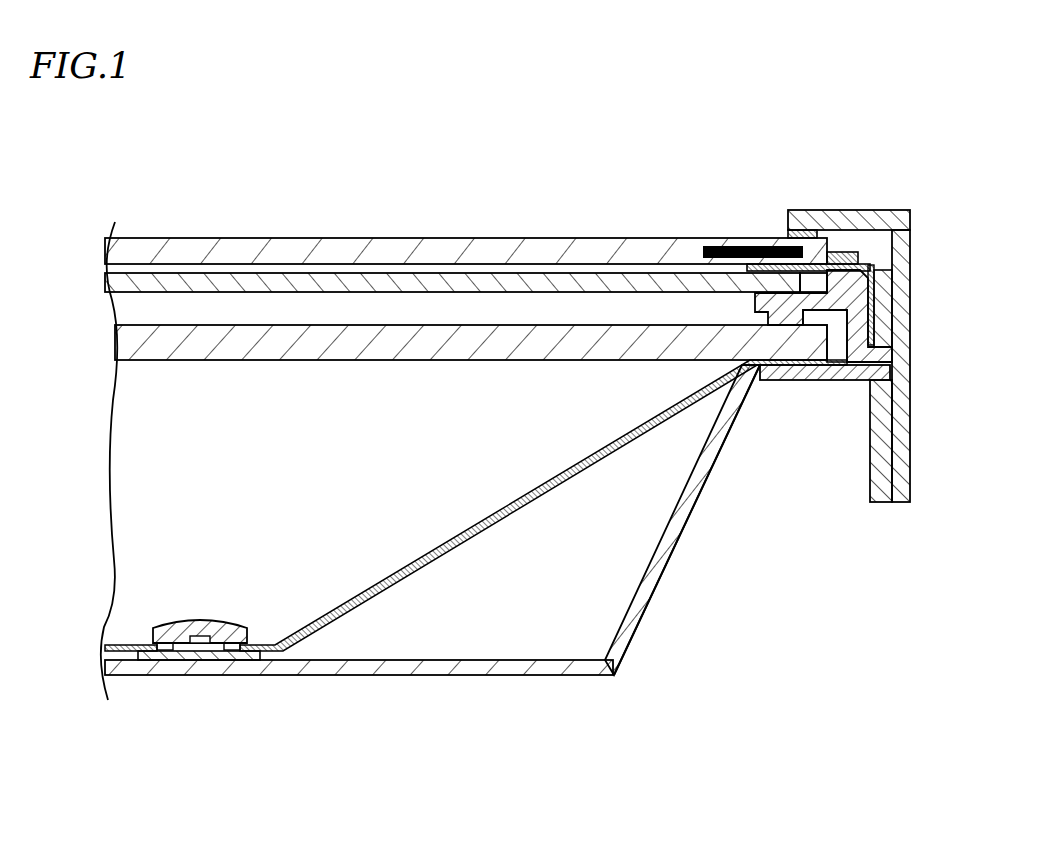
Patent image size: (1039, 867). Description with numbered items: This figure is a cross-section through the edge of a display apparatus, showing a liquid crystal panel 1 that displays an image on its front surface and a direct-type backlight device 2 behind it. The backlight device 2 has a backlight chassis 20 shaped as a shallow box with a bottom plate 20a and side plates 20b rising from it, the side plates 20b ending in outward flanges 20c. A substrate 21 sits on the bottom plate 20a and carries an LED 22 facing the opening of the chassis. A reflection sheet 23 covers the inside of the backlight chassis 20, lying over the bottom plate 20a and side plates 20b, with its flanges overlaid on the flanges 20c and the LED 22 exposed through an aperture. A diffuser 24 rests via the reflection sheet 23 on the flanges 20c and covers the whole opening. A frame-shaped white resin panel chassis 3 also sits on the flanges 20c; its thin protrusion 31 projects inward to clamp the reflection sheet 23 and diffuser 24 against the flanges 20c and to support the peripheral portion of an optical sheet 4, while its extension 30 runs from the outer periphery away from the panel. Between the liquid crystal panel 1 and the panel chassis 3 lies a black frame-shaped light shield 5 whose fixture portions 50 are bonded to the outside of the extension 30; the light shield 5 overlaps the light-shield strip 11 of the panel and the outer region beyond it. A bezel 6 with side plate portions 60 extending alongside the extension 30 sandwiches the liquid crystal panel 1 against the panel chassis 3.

The liquid crystal panel 1 is at (612, 243).
The light-shield strip 11 is at (712, 246).
The backlight device 2 is at (497, 560).
The backlight chassis 20 is at (736, 523).
The bottom plate 20a is at (583, 672).
The side plate 20b is at (668, 568).
The flange 20c is at (787, 373).
The substrate 21 is at (228, 660).
The LED 22 is at (200, 622).
The reflection sheet 23 is at (507, 503).
The diffuser 24 is at (497, 363).
The panel chassis 3 is at (870, 350).
The extension 30 is at (880, 325).
The protrusion 31 is at (811, 358).
The optical sheet 4 is at (460, 280).
The light shield 5 is at (843, 263).
The fixture portion 50 is at (872, 280).
The bezel 6 is at (897, 313).
The side plate portion 60 is at (905, 262).